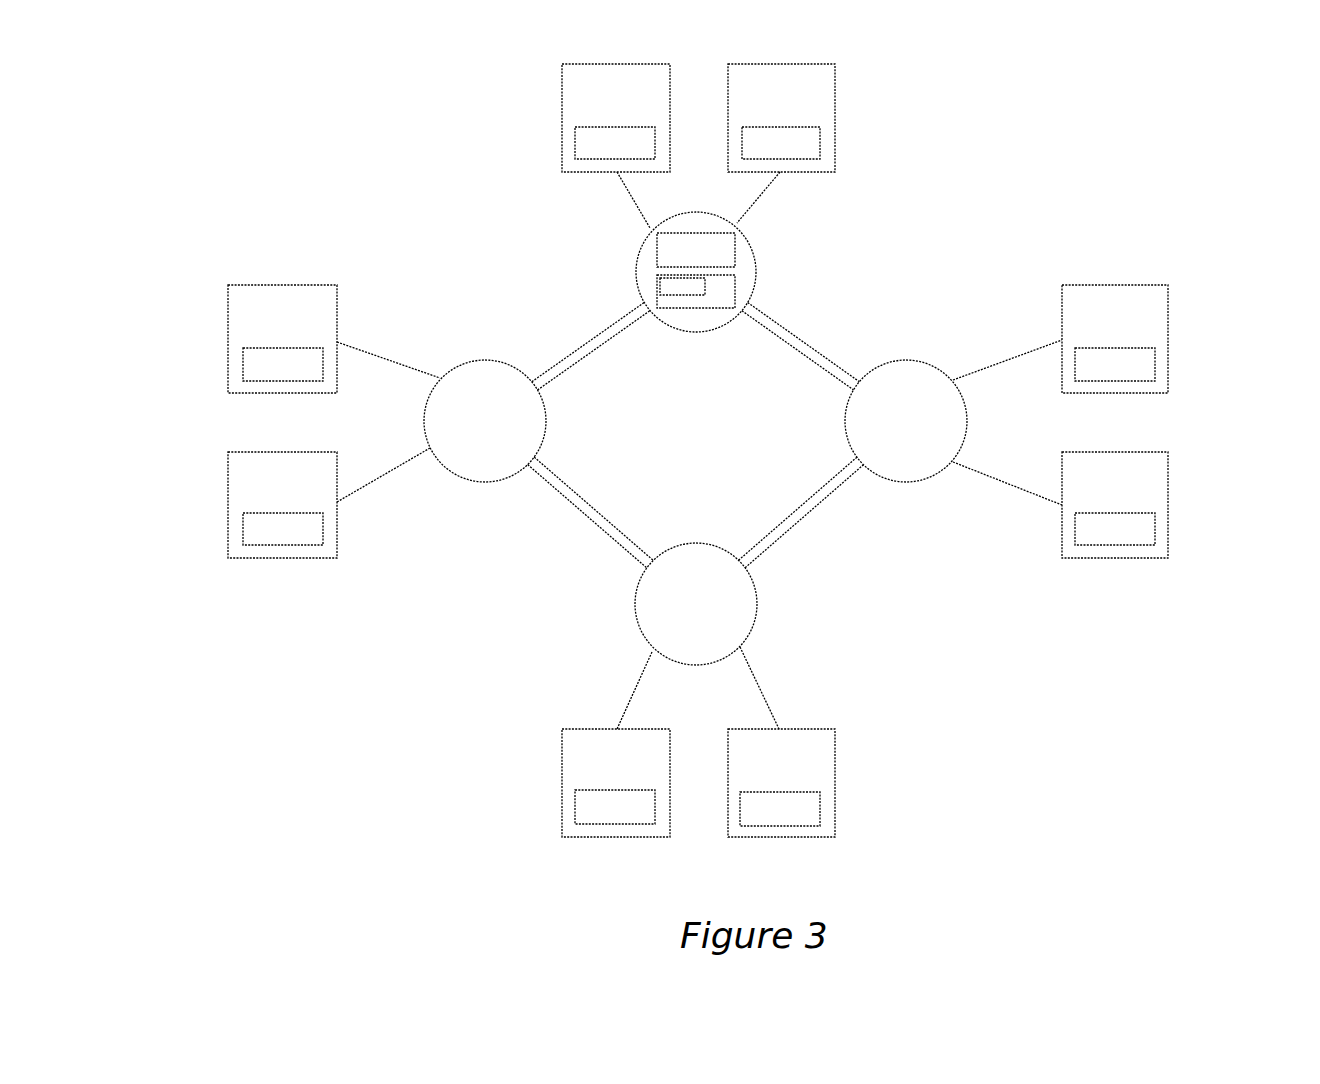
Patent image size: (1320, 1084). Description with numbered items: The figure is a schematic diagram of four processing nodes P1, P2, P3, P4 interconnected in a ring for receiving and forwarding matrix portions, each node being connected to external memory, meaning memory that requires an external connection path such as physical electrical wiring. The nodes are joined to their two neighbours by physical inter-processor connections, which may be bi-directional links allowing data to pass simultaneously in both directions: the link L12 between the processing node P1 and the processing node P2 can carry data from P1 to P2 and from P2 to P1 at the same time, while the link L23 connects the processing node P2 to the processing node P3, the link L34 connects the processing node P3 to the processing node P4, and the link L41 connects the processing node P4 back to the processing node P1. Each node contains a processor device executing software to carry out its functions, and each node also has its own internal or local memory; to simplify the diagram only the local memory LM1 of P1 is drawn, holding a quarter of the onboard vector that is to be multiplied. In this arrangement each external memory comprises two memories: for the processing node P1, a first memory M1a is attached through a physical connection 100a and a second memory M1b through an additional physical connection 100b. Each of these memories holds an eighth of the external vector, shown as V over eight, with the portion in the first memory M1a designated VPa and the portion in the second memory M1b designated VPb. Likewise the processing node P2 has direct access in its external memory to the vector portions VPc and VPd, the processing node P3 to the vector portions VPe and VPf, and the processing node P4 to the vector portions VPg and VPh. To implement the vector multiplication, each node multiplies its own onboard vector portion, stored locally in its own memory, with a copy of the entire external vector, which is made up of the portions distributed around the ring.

The processing node P1 is at (650, 245).
The processing node P2 is at (918, 372).
The processing node P3 is at (752, 618).
The processing node P4 is at (480, 477).
The local memory LM1 is at (728, 298).
The second memory M1b is at (580, 100).
The first memory M1a is at (833, 80).
The vector portion VPb is at (590, 148).
The vector portion VPa is at (810, 147).
The physical connection 100b is at (627, 195).
The physical connection 100a is at (772, 187).
The physical communication link L41 is at (612, 348).
The physical communication link L12 is at (798, 355).
The physical communication link L34 is at (600, 510).
The physical communication link L23 is at (792, 522).
The vector portion VPh is at (263, 370).
The vector portion VPg is at (255, 530).
The vector portion VPc is at (1148, 369).
The vector portion VPd is at (1147, 535).
The vector portion VPf is at (590, 807).
The vector portion VPe is at (808, 810).